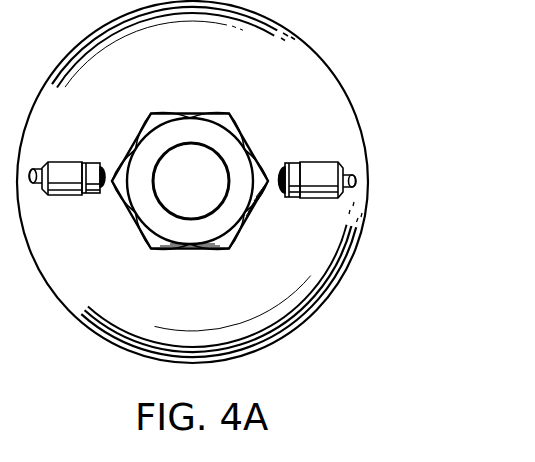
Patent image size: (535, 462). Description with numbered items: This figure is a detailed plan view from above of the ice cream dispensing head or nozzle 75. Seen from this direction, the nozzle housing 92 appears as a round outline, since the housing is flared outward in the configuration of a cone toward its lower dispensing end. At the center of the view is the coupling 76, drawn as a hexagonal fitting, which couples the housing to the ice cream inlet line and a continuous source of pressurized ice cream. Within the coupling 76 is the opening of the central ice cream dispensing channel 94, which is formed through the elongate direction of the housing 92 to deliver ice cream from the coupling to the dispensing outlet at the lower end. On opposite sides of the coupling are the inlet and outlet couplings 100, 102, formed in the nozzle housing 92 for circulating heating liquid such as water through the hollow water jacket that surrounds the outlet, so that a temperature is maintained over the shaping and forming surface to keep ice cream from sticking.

The ice cream dispensing head or nozzle 75 is at (292, 337).
The coupling 76 is at (200, 250).
The nozzle housing 92 is at (203, 75).
The central ice cream dispensing channel 94 is at (205, 180).
The inlet coupling 100 is at (332, 160).
The outlet coupling 102 is at (54, 161).